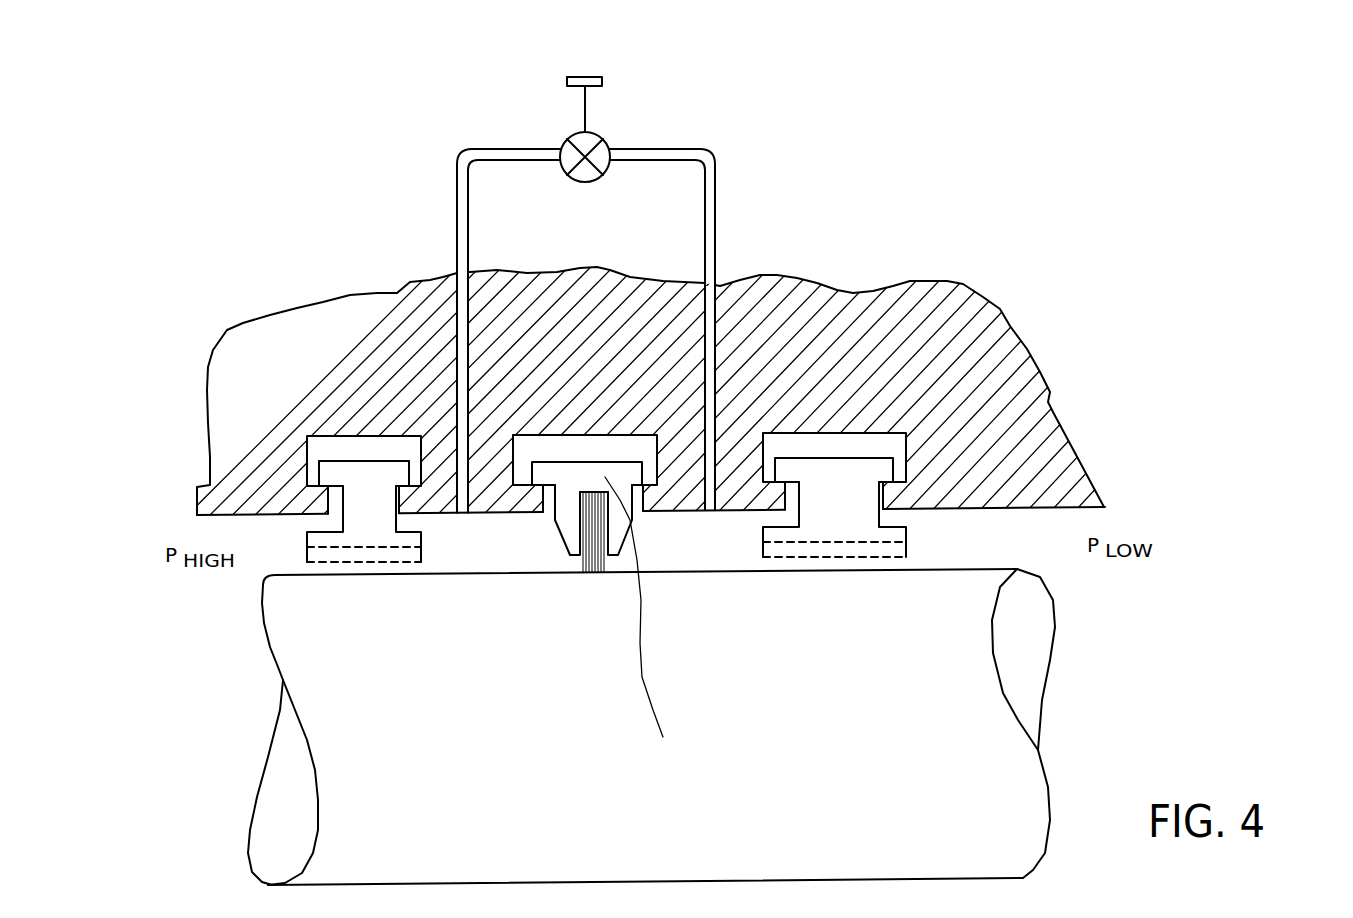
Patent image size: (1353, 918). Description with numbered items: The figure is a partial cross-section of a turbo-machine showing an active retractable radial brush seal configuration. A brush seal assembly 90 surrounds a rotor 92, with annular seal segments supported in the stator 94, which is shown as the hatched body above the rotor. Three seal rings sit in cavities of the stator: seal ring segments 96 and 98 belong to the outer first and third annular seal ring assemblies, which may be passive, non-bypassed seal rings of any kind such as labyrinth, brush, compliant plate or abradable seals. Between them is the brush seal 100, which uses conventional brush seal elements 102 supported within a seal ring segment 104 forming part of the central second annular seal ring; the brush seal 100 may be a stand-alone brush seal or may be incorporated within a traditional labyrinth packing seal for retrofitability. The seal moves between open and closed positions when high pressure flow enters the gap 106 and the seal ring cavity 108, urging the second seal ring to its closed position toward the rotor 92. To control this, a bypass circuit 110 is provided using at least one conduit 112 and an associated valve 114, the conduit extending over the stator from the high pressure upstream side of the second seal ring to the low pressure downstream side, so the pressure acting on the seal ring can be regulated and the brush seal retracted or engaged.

The brush seal assembly 90 is at (787, 138).
The rotor 92 is at (698, 727).
The stator 94 is at (768, 364).
The seal ring segment 96 is at (320, 388).
The seal ring segment 98 is at (834, 385).
The brush seal 100 is at (551, 590).
The brush seal elements 102 is at (599, 585).
The seal ring segment 104 is at (712, 568).
The gap 106 is at (524, 558).
The seal ring cavity 108 is at (594, 497).
The bypass circuit 110 is at (567, 305).
The conduit 112 is at (405, 331).
The valve 114 is at (637, 129).